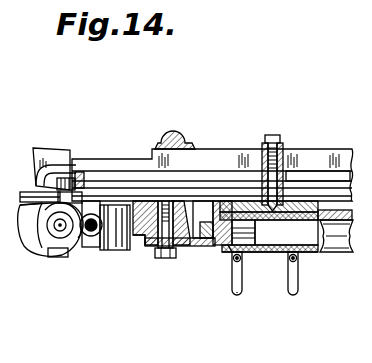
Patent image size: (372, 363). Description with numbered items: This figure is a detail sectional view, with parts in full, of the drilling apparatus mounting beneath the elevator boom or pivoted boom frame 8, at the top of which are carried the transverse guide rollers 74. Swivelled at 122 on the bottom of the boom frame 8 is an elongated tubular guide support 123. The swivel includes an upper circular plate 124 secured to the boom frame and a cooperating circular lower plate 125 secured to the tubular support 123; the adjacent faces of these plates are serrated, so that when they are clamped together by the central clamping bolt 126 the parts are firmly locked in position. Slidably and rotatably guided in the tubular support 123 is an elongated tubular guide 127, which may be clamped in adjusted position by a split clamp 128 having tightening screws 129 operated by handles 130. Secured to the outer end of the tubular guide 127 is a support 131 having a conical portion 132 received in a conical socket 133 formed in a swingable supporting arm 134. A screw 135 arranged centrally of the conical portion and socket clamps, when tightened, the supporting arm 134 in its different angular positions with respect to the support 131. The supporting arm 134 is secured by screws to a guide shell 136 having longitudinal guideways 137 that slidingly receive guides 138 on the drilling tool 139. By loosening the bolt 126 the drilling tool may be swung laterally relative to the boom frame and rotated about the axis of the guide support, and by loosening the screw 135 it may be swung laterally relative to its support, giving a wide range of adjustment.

The elevator boom or pivoted boom frame 8 is at (236, 147).
The transverse guide rollers 74 is at (178, 133).
The swivel 122 is at (284, 203).
The tubular guide support 123 is at (342, 262).
The upper circular plate 124 is at (240, 210).
The lower plate 125 is at (323, 211).
The central clamping bolt 126 is at (279, 160).
The tubular guide 127 is at (280, 253).
The split clamp 128 is at (231, 249).
The tightening screws 129 is at (234, 262).
The handles 130 is at (238, 295).
The support 131 is at (201, 210).
The conical portion 132 is at (158, 249).
The conical socket 133 is at (158, 212).
The swingable supporting arm 134 is at (125, 247).
The screw 135 is at (164, 259).
The guide shell 136 is at (77, 256).
The longitudinal guideways 137 is at (90, 197).
The guides 138 is at (82, 192).
The drilling tool 139 is at (38, 242).